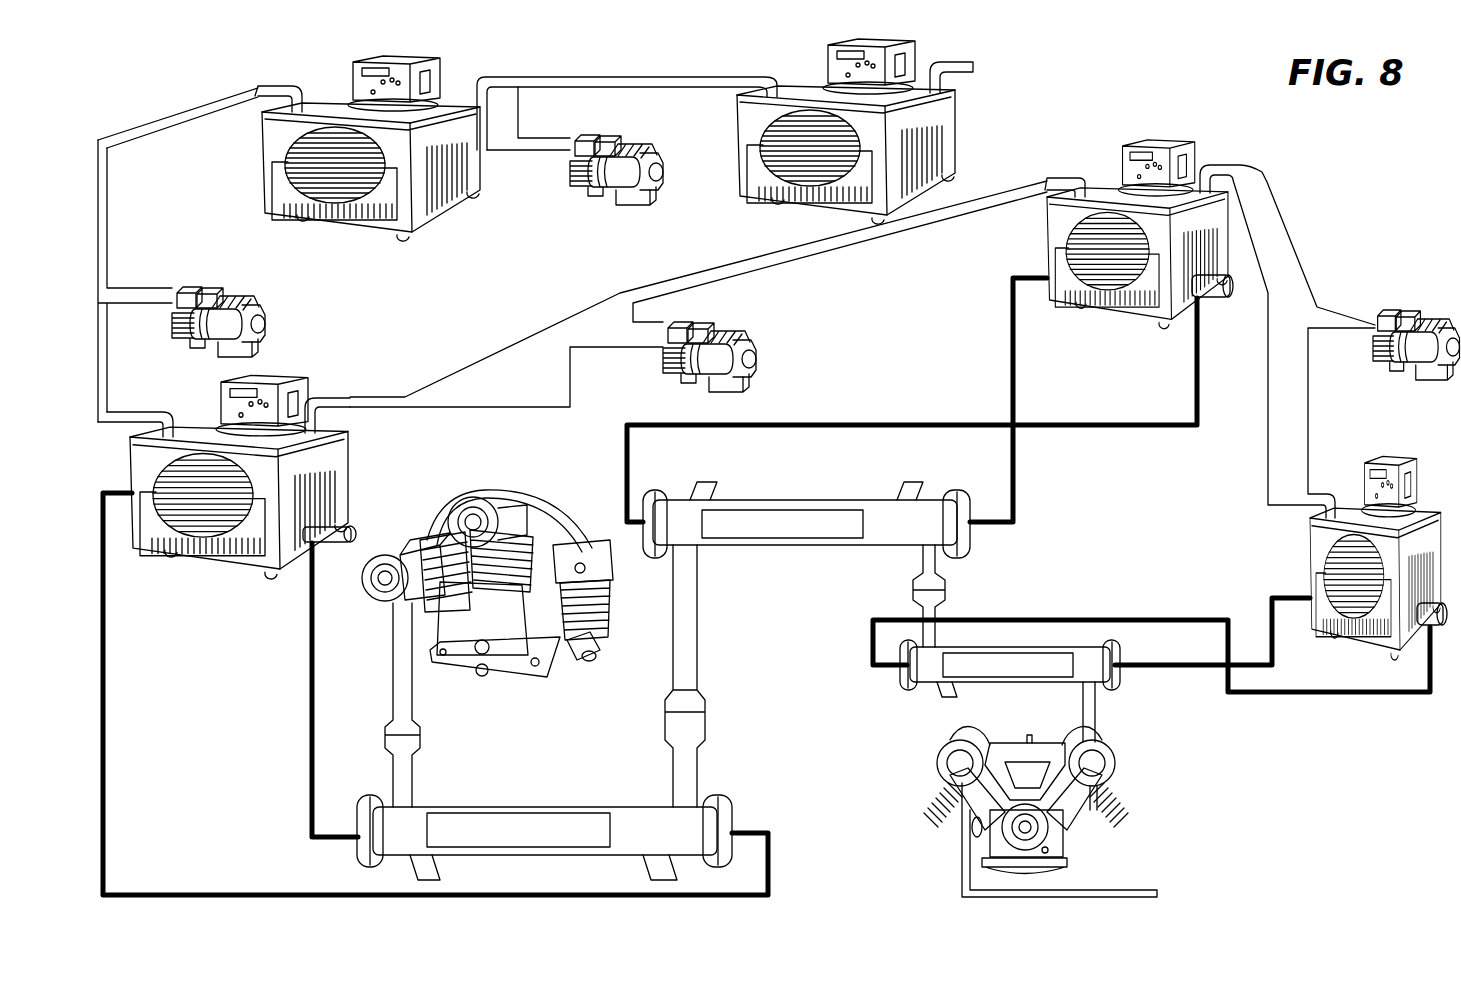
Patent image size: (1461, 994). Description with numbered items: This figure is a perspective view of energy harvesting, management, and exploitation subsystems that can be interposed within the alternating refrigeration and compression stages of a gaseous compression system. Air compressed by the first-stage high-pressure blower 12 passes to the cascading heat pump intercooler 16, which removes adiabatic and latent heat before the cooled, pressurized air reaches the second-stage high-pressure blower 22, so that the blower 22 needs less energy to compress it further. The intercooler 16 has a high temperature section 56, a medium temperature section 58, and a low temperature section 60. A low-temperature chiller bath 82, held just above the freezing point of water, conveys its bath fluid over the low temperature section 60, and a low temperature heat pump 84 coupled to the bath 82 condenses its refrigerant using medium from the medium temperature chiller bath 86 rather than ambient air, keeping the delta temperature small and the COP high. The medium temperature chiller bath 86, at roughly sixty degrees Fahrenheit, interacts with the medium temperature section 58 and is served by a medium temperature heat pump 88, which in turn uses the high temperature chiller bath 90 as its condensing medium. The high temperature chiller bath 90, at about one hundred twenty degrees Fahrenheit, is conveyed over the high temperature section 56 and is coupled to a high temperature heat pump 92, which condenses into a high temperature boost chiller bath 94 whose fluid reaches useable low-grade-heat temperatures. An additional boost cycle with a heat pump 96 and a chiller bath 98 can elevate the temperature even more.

The high-pressure blower 12 is at (490, 487).
The cascading heat pump intercooler 16 is at (828, 837).
The high-pressure blower 22 is at (923, 755).
The high temperature section 56 is at (545, 807).
The medium temperature section 58 is at (787, 500).
The low temperature section 60 is at (987, 647).
The low-temperature chiller bath 82 is at (1310, 557).
The low temperature heat pump 84 is at (1417, 316).
The medium temperature chiller bath 86 is at (1102, 310).
The medium temperature heat pump 88 is at (760, 370).
The high temperature chiller bath 90 is at (190, 557).
The high temperature heat pump 92 is at (265, 325).
The high temperature boost chiller bath 94 is at (455, 197).
The heat pump 96 is at (643, 195).
The chiller bath 98 is at (943, 152).